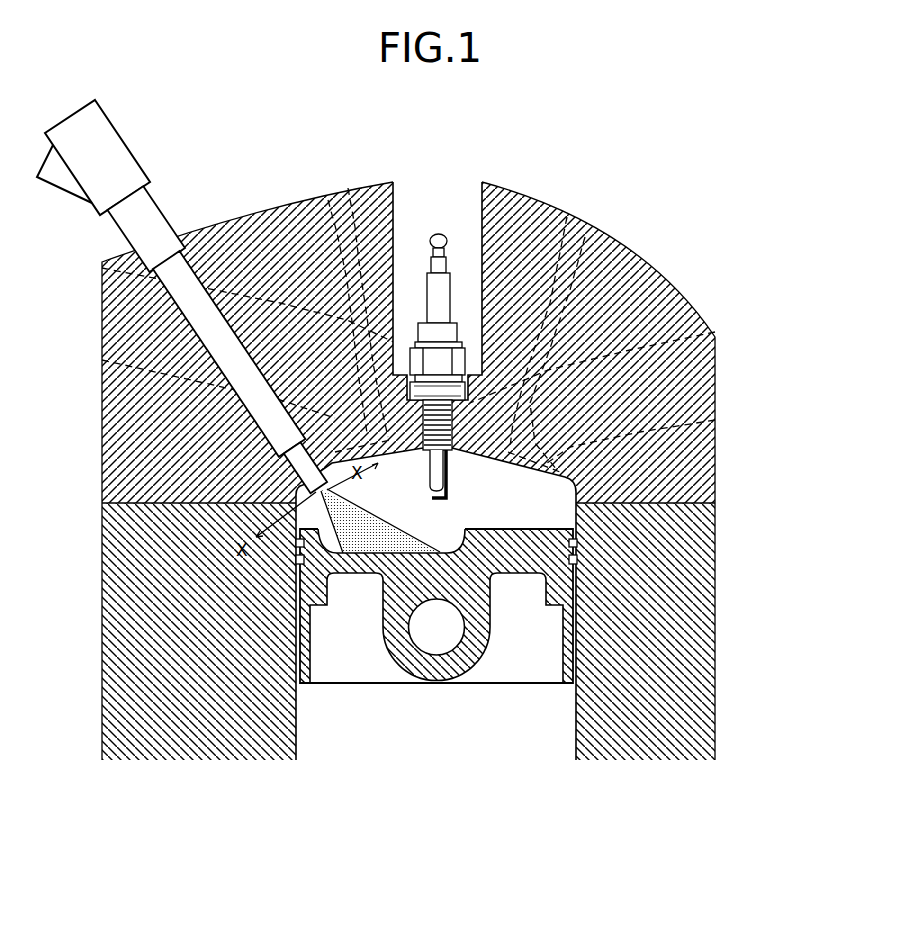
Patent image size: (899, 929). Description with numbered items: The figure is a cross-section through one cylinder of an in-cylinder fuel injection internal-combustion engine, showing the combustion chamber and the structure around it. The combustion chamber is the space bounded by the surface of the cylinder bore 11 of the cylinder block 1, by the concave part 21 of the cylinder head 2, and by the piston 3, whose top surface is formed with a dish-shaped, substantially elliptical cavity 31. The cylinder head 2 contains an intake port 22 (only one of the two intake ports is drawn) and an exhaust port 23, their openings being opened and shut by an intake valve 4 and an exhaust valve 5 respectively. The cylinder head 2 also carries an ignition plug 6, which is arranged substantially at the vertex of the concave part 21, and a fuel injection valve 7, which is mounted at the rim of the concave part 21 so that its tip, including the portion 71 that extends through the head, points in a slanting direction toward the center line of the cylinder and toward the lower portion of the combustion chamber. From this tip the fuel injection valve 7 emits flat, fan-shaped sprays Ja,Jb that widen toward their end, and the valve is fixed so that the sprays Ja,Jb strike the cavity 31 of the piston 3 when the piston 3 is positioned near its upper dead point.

The cylinder block 1 is at (122, 574).
The cylinder head 2 is at (122, 455).
The piston 3 is at (522, 685).
The intake valve 4 is at (307, 192).
The exhaust valve 5 is at (605, 233).
The ignition plug 6 is at (437, 233).
The fuel injection valve 7 is at (132, 147).
The cylinder bore 11 is at (575, 730).
The concave part 21 is at (573, 497).
The intake port 22 is at (101, 339).
The exhaust port 23 is at (715, 400).
The cavity 31 is at (410, 553).
The injector nozzle 71 is at (167, 213).
The sprays Ja,Jb is at (395, 556).